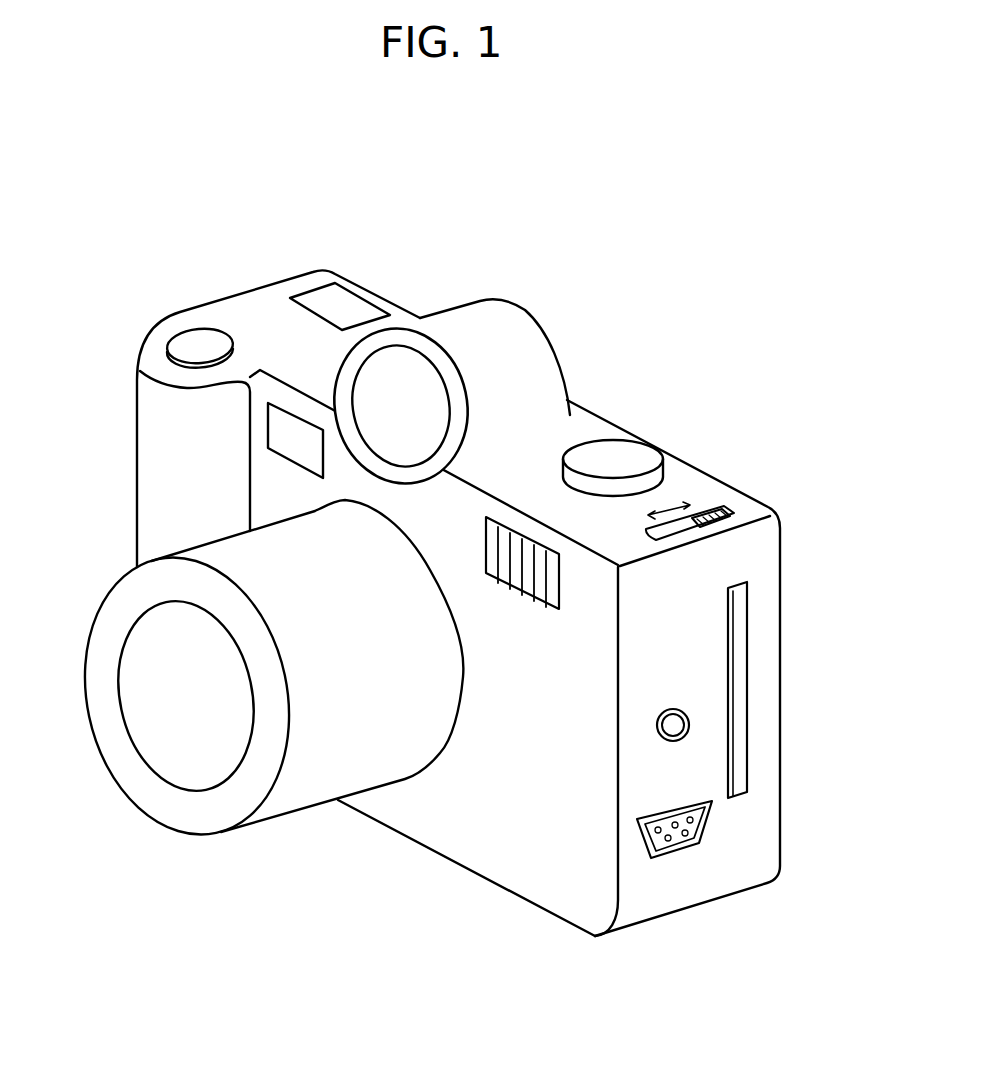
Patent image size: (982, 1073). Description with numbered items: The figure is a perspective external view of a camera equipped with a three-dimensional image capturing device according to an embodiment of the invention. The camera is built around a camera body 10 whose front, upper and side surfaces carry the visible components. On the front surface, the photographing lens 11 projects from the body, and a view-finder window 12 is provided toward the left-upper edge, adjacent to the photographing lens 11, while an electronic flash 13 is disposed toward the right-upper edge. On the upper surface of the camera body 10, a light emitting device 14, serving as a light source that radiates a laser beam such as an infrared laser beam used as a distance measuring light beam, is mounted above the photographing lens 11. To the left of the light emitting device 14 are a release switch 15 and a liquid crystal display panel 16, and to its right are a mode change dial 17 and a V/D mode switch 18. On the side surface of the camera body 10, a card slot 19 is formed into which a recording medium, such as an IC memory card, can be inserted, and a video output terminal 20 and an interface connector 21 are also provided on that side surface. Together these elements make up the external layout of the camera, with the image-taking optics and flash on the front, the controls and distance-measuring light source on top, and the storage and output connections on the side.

The camera body 10 is at (503, 841).
The photographing lens 11 is at (210, 813).
The view-finder window 12 is at (293, 438).
The electronic flash 13 is at (517, 585).
The light emitting device 14 is at (482, 323).
The release switch 15 is at (202, 343).
The liquid crystal display panel 16 is at (340, 307).
The mode change dial 17 is at (613, 463).
The V/D mode switch 18 is at (713, 511).
The card slot 19 is at (740, 630).
The video output terminal 20 is at (675, 725).
The interface connector 21 is at (716, 830).